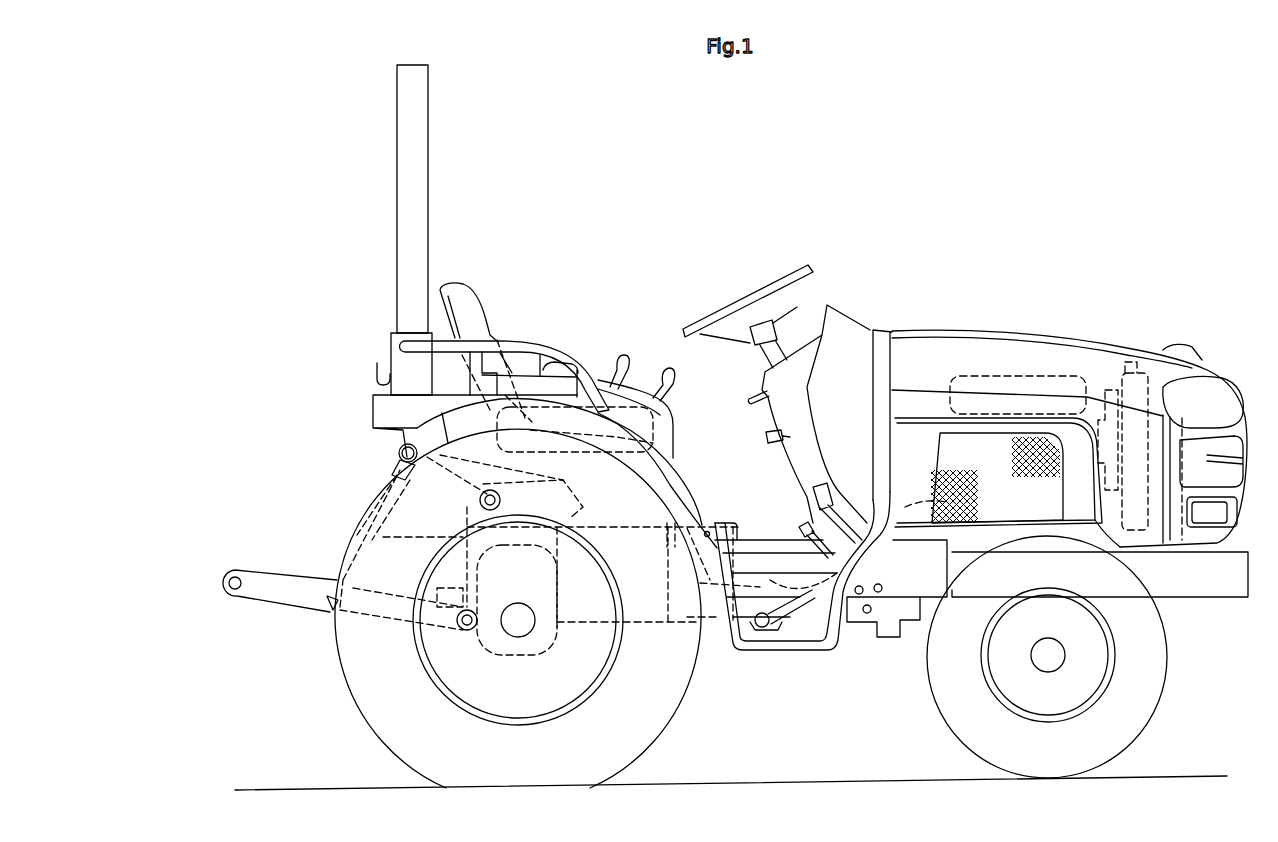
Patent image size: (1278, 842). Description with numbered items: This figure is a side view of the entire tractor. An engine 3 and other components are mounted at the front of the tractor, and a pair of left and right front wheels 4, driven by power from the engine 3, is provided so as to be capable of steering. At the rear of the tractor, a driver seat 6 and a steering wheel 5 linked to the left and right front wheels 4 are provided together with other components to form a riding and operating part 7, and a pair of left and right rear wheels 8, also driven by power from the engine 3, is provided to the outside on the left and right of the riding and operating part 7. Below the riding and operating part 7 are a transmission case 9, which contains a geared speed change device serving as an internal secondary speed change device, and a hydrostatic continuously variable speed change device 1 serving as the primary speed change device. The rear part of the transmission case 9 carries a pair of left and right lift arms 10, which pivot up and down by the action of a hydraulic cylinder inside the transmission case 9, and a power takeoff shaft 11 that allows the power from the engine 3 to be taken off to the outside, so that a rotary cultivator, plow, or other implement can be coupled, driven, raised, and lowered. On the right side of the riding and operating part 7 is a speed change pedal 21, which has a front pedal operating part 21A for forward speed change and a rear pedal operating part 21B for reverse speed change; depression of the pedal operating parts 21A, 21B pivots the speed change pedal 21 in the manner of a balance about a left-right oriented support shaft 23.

The hydrostatic continuously variable speed change device (HST) 1 is at (687, 623).
The engine 3 is at (1040, 377).
The front wheels 4 is at (1160, 687).
The steering wheel 5 is at (757, 290).
The driver seat 6 is at (484, 306).
The riding and operating part 7 is at (651, 282).
The rear wheels 8 is at (358, 690).
The transmission case 9 is at (643, 627).
The lift arms 10 is at (395, 478).
The power takeoff shaft 11 is at (445, 578).
The speed change pedal 21 is at (802, 478).
The front pedal operating part 21A is at (800, 528).
The rear pedal operating part 21B is at (723, 535).
The support shaft 23 is at (798, 608).